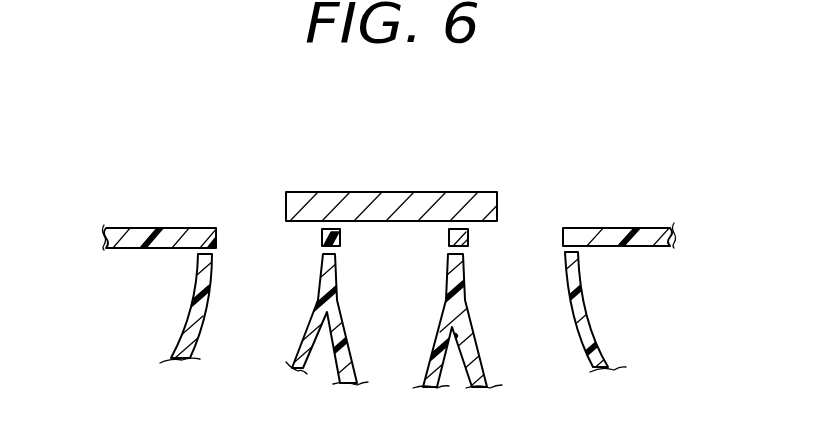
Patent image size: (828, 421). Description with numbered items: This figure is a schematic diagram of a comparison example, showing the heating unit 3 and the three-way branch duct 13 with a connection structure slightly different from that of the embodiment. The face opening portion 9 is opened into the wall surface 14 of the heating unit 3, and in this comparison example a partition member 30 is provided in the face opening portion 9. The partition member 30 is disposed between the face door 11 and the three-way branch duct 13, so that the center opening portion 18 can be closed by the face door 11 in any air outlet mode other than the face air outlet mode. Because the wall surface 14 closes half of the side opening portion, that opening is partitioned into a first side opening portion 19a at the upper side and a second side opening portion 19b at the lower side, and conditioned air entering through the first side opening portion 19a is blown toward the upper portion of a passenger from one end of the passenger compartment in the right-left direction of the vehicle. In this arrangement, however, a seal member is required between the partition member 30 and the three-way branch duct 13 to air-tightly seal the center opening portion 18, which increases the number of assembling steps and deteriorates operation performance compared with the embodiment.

The heating unit 3 is at (597, 238).
The face opening portion 9 is at (565, 196).
The face door 11 is at (423, 190).
The three-way branch duct 13 is at (182, 292).
The wall surface 14 is at (643, 247).
The center opening portion 18 is at (340, 267).
The first side opening portion 19a is at (211, 287).
The second side opening portion 19b is at (566, 300).
The partition member 30 is at (318, 238).